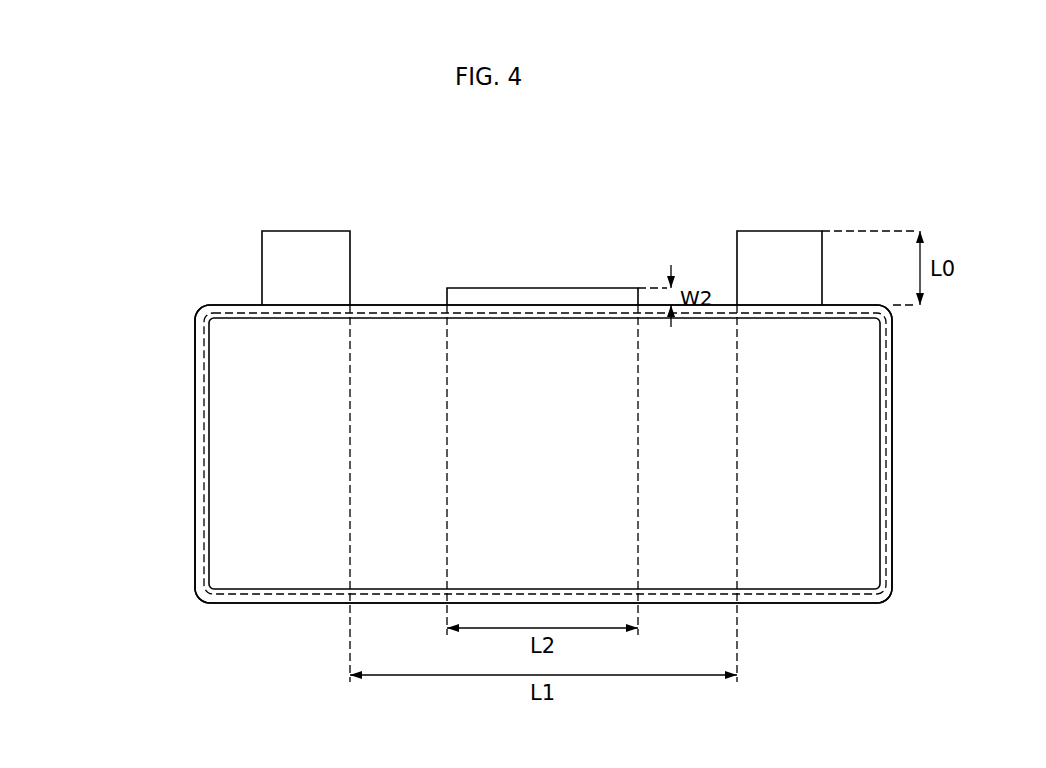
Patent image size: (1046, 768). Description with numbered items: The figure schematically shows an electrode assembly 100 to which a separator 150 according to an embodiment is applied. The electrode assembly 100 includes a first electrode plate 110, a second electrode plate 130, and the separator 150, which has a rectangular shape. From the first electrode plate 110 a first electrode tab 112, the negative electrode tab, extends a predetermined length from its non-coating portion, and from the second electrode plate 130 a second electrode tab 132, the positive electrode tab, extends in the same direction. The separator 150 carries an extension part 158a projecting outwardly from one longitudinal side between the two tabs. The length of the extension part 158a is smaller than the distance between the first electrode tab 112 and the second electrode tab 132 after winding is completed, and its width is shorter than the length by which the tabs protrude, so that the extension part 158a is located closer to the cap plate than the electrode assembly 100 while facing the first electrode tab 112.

The electrode assembly 100 is at (108, 357).
The first electrode plate 110 is at (197, 362).
The separator 150 is at (204, 412).
The second electrode plate 130 is at (230, 462).
The first electrode tab 112 is at (306, 238).
The second electrode tab 132 is at (782, 238).
The extension part 158a is at (539, 292).